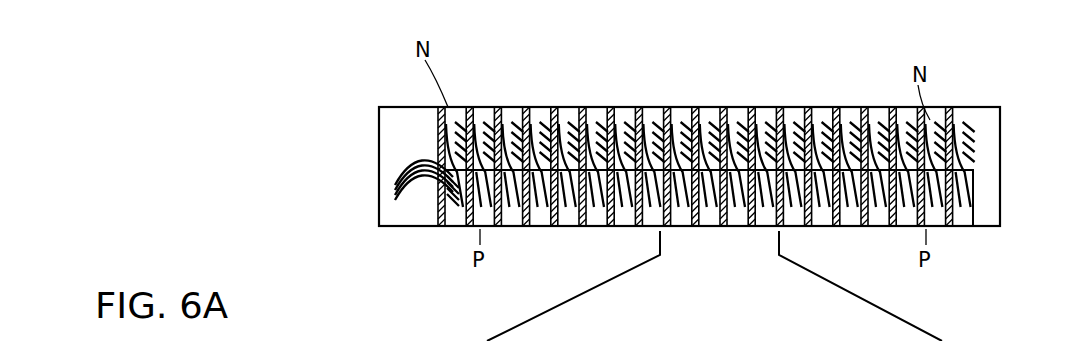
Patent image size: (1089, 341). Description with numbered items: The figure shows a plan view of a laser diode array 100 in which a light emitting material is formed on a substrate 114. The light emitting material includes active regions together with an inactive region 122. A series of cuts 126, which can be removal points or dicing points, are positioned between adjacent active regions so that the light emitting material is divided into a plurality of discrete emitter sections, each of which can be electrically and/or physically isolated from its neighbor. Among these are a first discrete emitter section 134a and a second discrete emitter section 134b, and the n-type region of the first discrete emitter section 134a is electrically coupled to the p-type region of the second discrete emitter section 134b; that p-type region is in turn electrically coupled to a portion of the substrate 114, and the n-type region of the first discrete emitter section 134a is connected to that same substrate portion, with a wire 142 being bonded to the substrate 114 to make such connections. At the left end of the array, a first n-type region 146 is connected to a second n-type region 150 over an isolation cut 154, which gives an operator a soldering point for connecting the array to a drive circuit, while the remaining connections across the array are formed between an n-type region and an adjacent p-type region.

The laser diode array 100 is at (309, 112).
The substrate 114 is at (1000, 123).
The inactive region 122 is at (538, 107).
The cuts 126 is at (610, 92).
The first discrete emitter section 134a is at (456, 91).
The second discrete emitter section 134b is at (489, 91).
The wire 142 is at (713, 122).
The first n-type region 146 is at (398, 222).
The second n-type region 150 is at (447, 226).
The isolation cut 154 is at (432, 98).